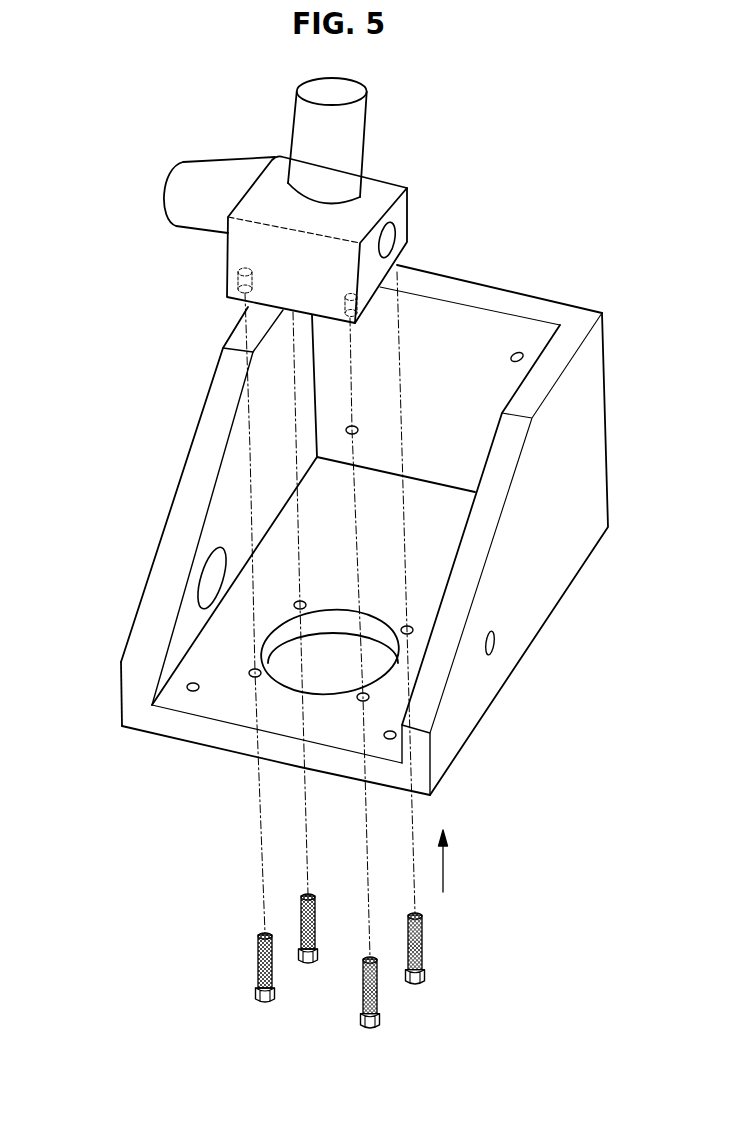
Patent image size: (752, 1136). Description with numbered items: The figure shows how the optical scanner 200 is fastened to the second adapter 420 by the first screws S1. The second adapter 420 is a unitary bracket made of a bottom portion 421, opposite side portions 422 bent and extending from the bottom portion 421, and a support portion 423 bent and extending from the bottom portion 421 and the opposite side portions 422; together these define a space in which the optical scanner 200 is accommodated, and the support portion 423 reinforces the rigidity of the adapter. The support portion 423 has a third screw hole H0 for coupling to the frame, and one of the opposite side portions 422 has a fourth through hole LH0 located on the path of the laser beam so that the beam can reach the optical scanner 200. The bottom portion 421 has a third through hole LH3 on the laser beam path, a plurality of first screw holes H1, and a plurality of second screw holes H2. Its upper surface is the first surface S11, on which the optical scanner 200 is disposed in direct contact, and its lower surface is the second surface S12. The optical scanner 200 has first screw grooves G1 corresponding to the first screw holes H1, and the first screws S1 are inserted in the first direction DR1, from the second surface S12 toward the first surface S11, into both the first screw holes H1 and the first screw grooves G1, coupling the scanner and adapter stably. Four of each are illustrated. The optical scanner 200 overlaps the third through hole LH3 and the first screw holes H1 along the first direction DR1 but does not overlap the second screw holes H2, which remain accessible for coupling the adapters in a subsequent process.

The optical scanner 200 is at (227, 260).
The second adapter 420 is at (334, 538).
The bottom portion 421 is at (309, 655).
The opposite side portions 422 is at (360, 551).
The support portion 423 is at (491, 278).
The first screw grooves G1 is at (223, 287).
The third screw hole H0 is at (513, 362).
The first screw holes H1 is at (255, 672).
The second screw holes H2 is at (190, 688).
The first surface S11 is at (215, 658).
The second surface S12 is at (248, 755).
The fourth through hole LH0 is at (495, 640).
The third through hole LH3 is at (340, 651).
The first screws S1 is at (422, 952).
The first direction DR1 is at (468, 861).